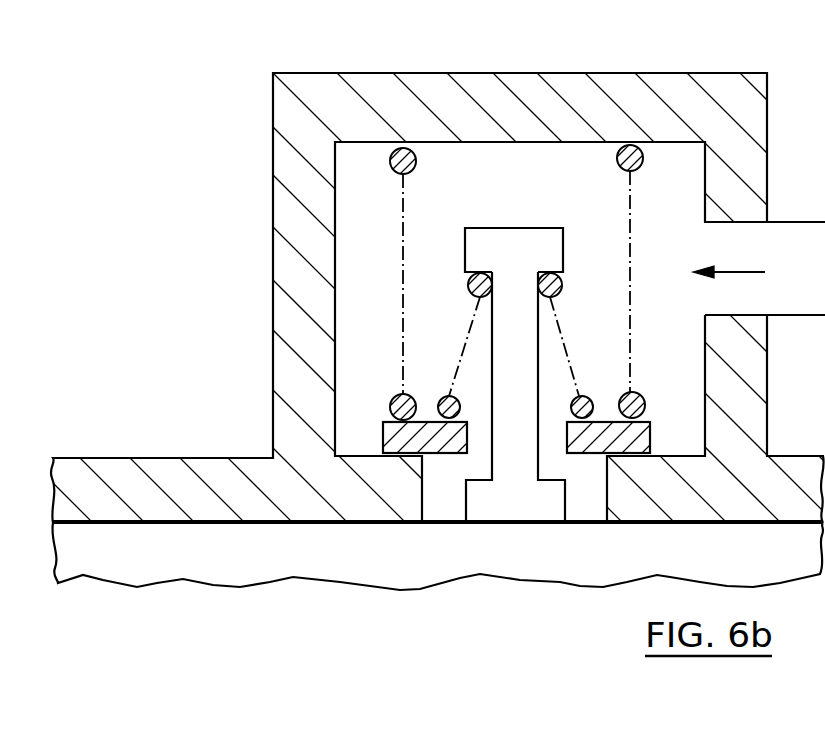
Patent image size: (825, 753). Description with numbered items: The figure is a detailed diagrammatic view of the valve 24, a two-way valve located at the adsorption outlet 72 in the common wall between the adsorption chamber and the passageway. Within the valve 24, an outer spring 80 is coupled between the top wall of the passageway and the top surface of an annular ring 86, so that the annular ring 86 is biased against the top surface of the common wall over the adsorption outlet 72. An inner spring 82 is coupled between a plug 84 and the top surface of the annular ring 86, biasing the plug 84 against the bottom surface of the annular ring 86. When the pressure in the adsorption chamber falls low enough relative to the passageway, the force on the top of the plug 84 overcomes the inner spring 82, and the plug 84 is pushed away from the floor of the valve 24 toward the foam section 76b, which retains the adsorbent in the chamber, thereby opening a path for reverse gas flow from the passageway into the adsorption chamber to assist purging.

The valve 24 is at (536, 186).
The adsorption outlet 72 is at (465, 471).
The foam section 76b is at (242, 565).
The outer spring 80 is at (403, 220).
The inner spring 82 is at (464, 340).
The plug 84 is at (540, 243).
The annular ring 86 is at (651, 431).